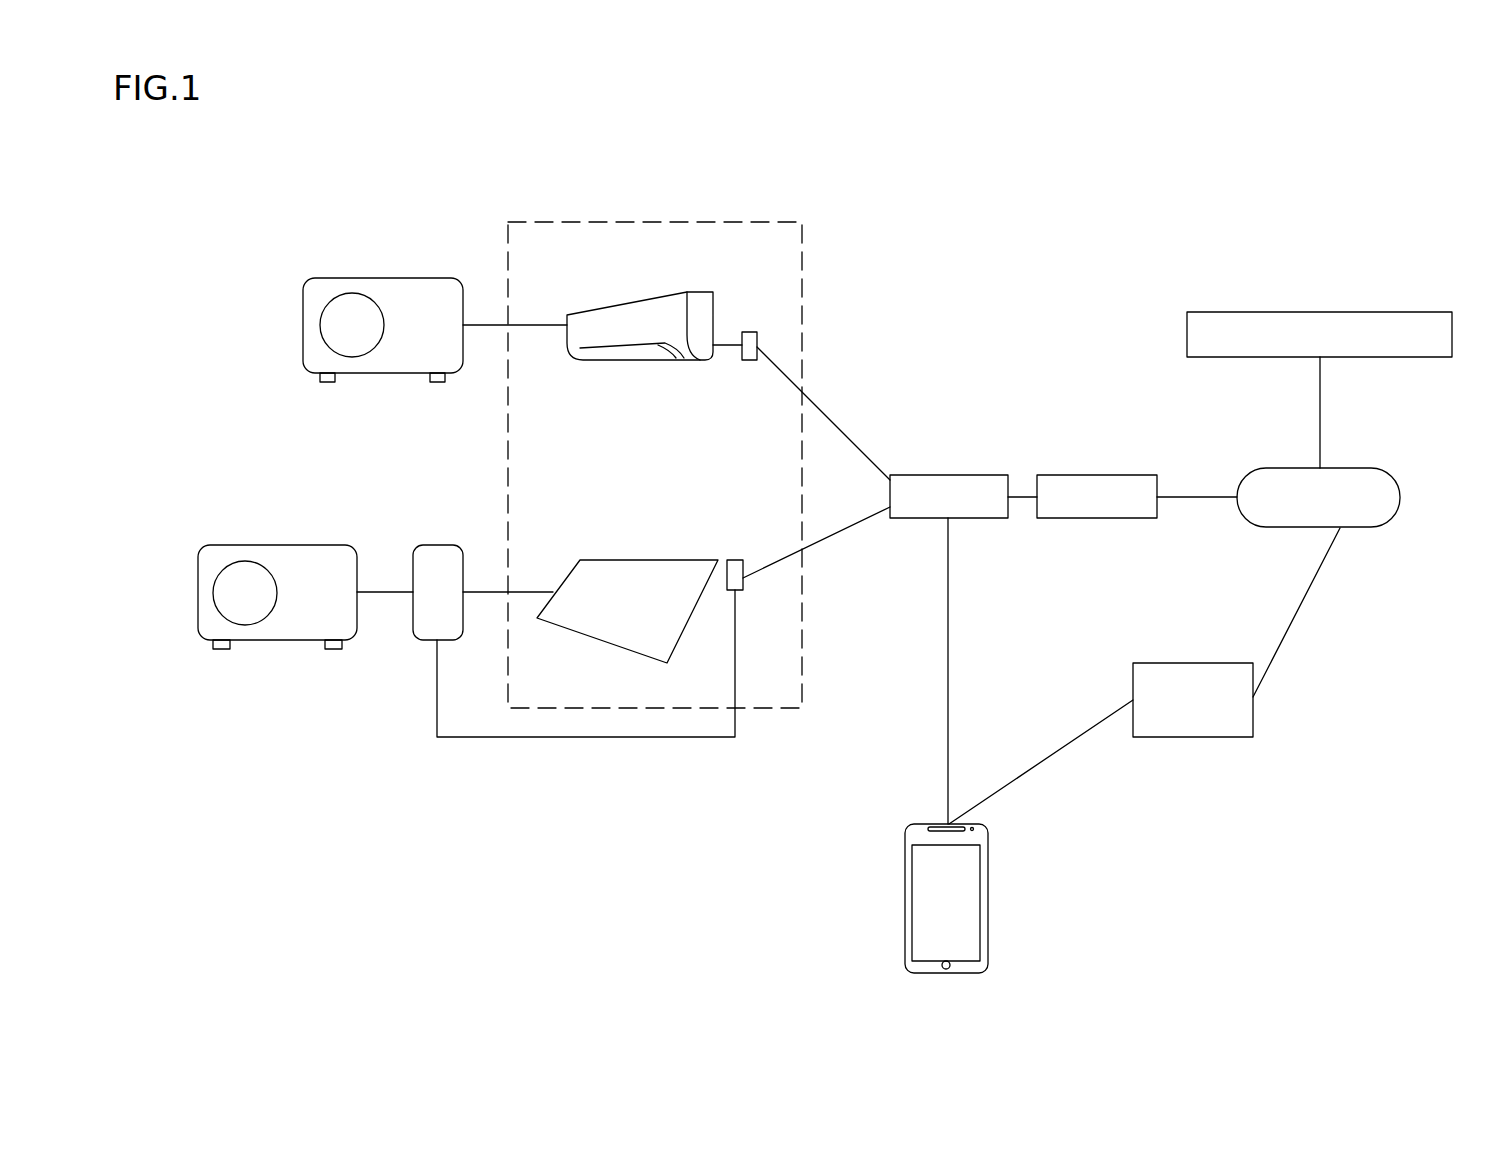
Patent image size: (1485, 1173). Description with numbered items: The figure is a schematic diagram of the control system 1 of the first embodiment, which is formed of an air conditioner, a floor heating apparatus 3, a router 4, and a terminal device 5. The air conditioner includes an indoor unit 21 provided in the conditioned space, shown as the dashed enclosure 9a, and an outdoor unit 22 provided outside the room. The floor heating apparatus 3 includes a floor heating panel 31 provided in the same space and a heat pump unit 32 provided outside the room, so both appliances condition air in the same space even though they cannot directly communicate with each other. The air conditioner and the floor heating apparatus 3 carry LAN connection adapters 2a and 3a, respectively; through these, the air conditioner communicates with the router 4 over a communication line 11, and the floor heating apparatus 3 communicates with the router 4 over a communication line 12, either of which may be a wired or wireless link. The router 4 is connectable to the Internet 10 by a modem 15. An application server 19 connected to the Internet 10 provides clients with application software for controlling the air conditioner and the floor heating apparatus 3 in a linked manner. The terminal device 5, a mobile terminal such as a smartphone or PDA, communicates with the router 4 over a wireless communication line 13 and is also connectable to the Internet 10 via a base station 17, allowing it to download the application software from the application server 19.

The control system 1 is at (268, 212).
The LAN connection adapter 2a is at (748, 332).
The floor heating apparatus 3 is at (434, 545).
The LAN connection adapter 3a is at (733, 560).
The router 4 is at (972, 475).
The terminal device 5 is at (870, 816).
The building (indoor area) 9a is at (802, 288).
The Internet 10 is at (1357, 468).
The communication line 11 is at (847, 420).
The communication line 12 is at (833, 538).
The communication line 13 is at (949, 622).
The modem 15 is at (1125, 475).
The base station 17 is at (1208, 663).
The application server 19 is at (1357, 312).
The indoor unit 21 is at (623, 304).
The outdoor unit 22 is at (403, 278).
The floor heating panel 31 is at (599, 560).
The heat pump unit 32 is at (284, 545).